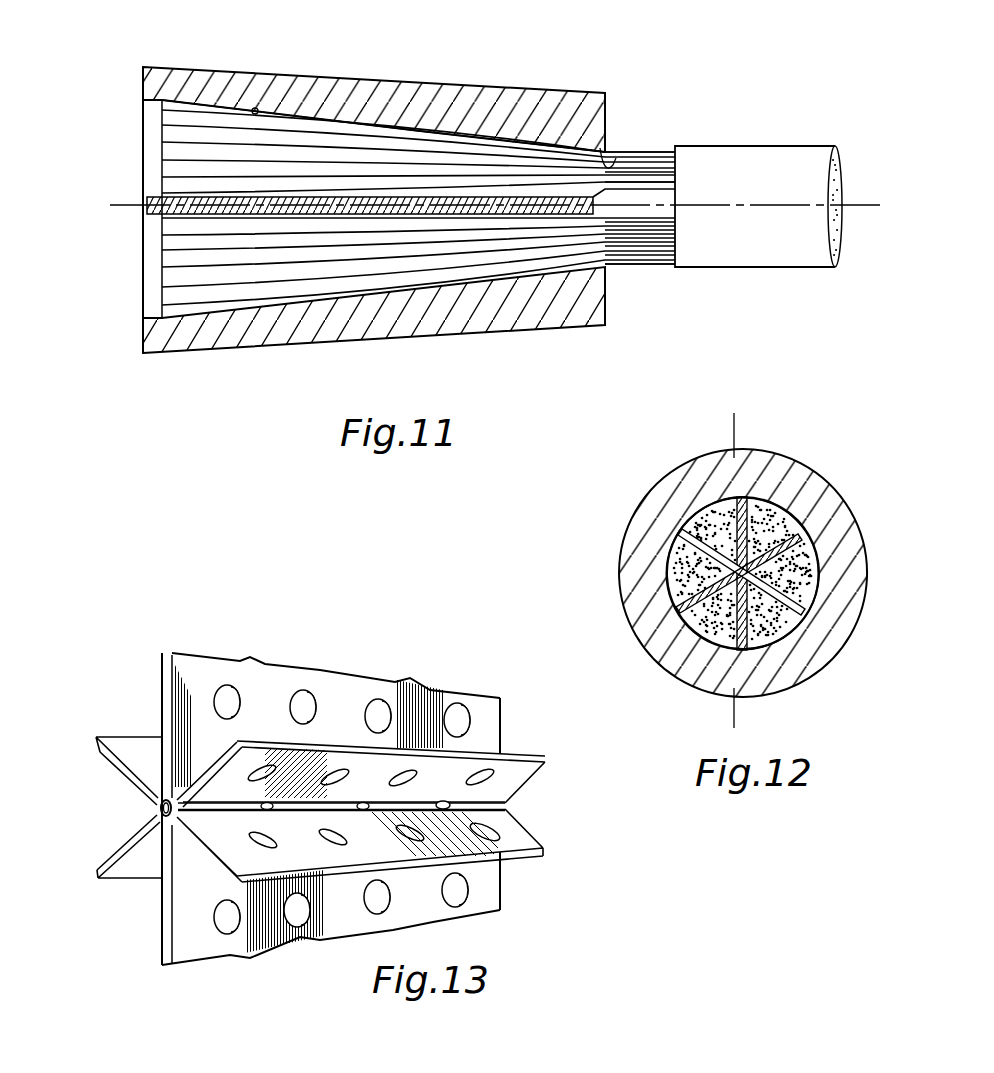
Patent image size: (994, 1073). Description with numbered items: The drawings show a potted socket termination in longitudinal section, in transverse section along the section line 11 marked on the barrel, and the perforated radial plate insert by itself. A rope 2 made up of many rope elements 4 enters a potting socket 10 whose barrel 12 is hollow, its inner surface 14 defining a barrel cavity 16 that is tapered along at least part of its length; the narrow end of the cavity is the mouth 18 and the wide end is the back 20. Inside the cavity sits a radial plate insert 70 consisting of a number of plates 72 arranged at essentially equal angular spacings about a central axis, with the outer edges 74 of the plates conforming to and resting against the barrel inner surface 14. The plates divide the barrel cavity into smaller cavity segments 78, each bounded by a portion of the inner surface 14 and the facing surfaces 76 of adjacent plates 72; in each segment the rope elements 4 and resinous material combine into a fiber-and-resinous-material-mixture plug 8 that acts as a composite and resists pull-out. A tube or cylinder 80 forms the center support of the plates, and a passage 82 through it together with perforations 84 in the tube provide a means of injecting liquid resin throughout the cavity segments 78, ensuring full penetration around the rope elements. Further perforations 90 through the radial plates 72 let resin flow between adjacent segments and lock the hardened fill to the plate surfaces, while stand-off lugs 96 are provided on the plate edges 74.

In FIG. 11, the rope 2 is at (767, 145).
In FIG. 11, the rope elements 4 is at (660, 147).
In FIG. 11, the fiber-and-resinous-material-mixture plug 8 is at (530, 155).
In FIG. 12, the fiber-and-resinous-material-mixture plug 8 is at (822, 570).
In FIG. 11, the potting socket 10 is at (618, 276).
In FIG. 12, the section line 11- 11 is at (722, 428).
In FIG. 11, the barrel 12 is at (205, 67).
In FIG. 12, the barrel 12 is at (778, 450).
In FIG. 11, the inner surface 14 is at (254, 108).
In FIG. 12, the inner surface 14 is at (700, 517).
In FIG. 11, the barrel cavity 16 is at (298, 112).
In FIG. 12, the barrel cavity 16 is at (663, 553).
In FIG. 11, the mouth 18 is at (622, 162).
In FIG. 11, the back 20 is at (143, 80).
In FIG. 11, the radial plate insert 70 is at (162, 125).
In FIG. 12, the radial plate insert 70 is at (792, 520).
In FIG. 12, the plates 72 is at (805, 525).
In FIG. 13, the plates 72 is at (485, 692).
In FIG. 11, the outer edges 74 is at (475, 140).
In FIG. 12, the facing surfaces 76 is at (815, 548).
In FIG. 12, the cavity segments 78 is at (807, 595).
In FIG. 13, the tube or cylinder 80 is at (155, 804).
In FIG. 13, the passage 82 is at (155, 813).
In FIG. 13, the perforations 84 is at (267, 810).
In FIG. 13, the perforations 90 is at (227, 688).
In FIG. 13, the stand-off lugs 96 is at (415, 934).